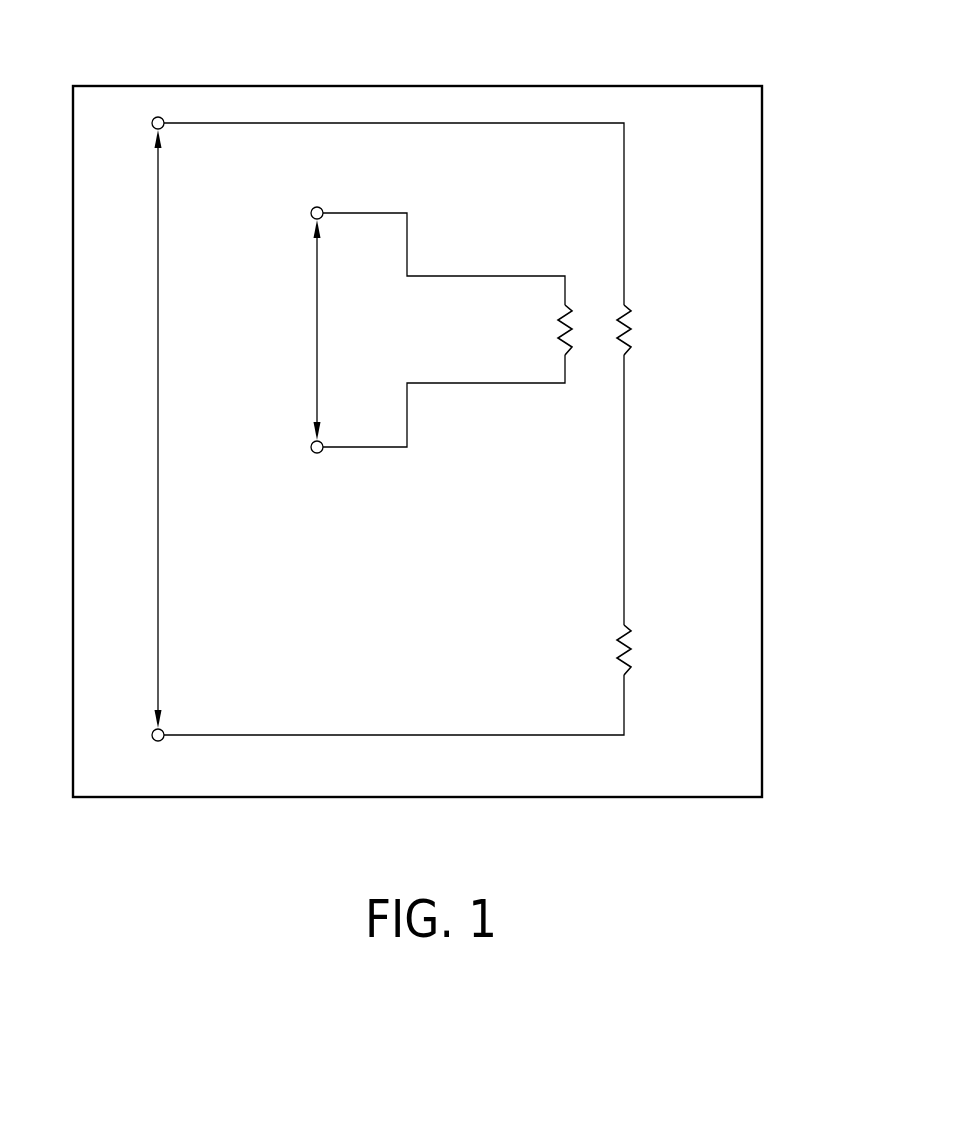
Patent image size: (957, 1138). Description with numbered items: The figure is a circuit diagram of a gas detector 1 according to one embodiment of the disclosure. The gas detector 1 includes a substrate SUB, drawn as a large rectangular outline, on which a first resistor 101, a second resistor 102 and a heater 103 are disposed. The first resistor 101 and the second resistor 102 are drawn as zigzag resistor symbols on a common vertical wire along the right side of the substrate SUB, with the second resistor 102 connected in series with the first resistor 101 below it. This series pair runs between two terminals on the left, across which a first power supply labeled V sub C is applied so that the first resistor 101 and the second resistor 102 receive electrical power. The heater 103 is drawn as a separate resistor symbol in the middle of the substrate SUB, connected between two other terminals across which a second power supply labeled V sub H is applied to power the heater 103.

The gas detector 1 is at (58, 24).
The substrate SUB is at (763, 133).
The first resistor 101 is at (631, 325).
The second resistor 102 is at (630, 647).
The heater 103 is at (557, 329).